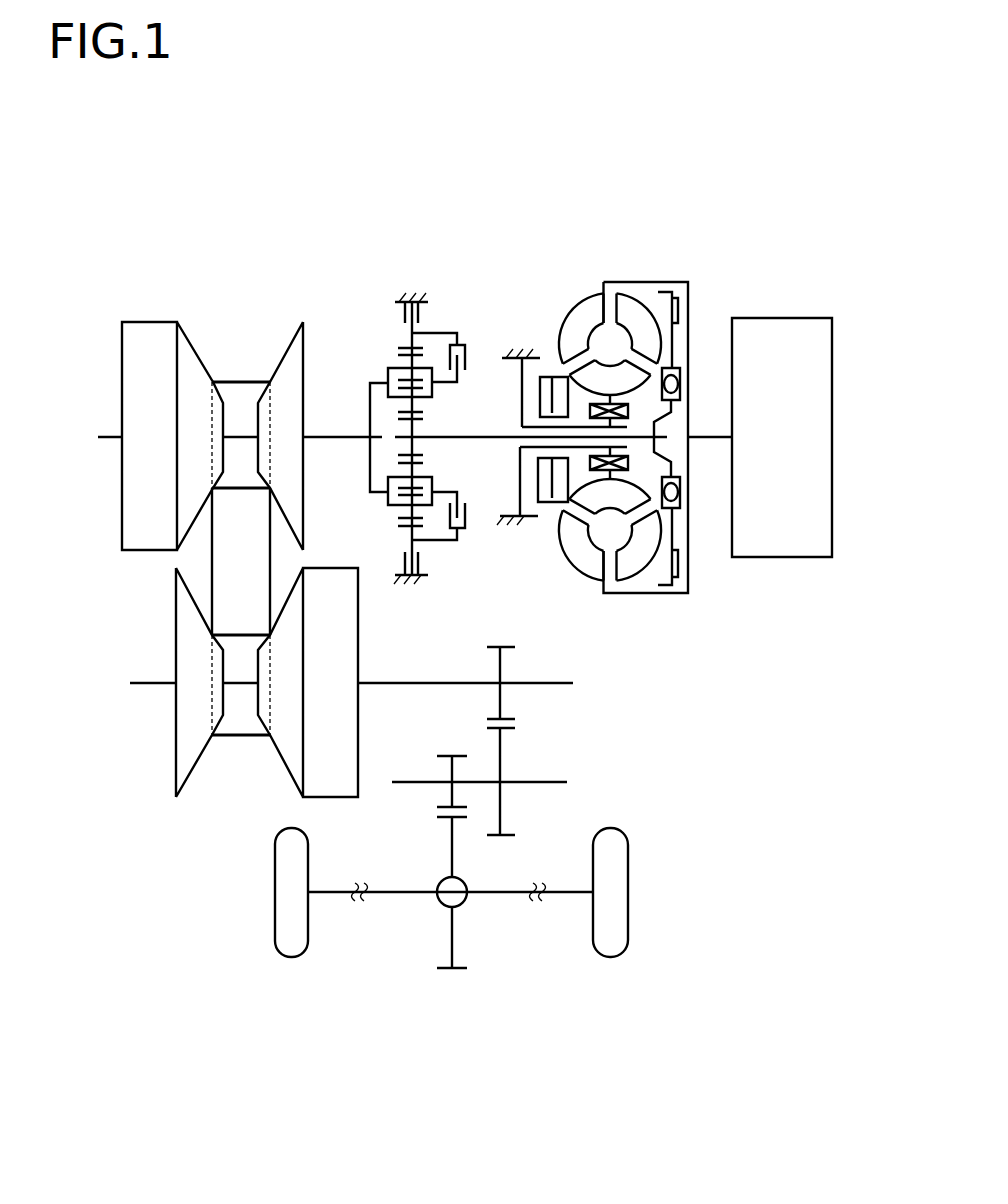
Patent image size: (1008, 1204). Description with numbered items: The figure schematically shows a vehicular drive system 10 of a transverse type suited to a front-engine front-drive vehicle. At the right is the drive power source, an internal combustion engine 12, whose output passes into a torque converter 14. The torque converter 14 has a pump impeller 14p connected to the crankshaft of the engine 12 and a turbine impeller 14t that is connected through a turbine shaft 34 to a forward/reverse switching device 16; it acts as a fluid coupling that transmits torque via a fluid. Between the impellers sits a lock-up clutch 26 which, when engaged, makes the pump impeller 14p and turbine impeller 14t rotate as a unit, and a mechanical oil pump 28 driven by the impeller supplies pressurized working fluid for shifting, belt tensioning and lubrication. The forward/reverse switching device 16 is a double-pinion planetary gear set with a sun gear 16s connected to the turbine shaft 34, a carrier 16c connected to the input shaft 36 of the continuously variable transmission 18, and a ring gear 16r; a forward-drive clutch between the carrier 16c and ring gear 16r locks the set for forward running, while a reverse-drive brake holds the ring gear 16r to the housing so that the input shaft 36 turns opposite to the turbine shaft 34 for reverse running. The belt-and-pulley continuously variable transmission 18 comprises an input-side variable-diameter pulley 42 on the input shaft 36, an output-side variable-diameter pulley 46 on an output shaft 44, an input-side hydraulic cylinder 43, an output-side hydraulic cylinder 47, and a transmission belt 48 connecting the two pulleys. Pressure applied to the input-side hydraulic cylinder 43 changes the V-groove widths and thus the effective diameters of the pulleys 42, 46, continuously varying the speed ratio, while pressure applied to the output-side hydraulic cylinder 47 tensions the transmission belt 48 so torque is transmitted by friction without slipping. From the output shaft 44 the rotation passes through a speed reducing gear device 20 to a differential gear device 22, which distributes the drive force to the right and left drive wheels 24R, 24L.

The vehicular drive system 10 is at (790, 252).
The internal combustion engine 12 is at (820, 390).
The torque converter 14 is at (628, 260).
The pump impeller 14p is at (580, 553).
The turbine impeller 14t is at (625, 562).
The forward/reverse switching device 16 is at (457, 296).
The carrier 16c is at (388, 373).
The sun gear 16s is at (403, 453).
The ring gear 16r is at (403, 527).
The continuously variable transmission 18 is at (225, 822).
The speed reducing gear device 20 is at (602, 738).
The differential gear device 22 is at (443, 897).
The left drive wheel 24L is at (285, 940).
The right drive wheel 24R is at (620, 910).
The lock-up clutch 26 is at (678, 310).
The oil pump 28 is at (552, 377).
The turbine shaft 34 is at (487, 440).
The input shaft 36 is at (330, 435).
The input-side variable-diameter pulley 42 is at (285, 333).
The input-side hydraulic cylinder 43 is at (133, 343).
The output shaft 44 is at (427, 687).
The output-side variable-diameter pulley 46 is at (195, 780).
The output-side hydraulic cylinder 47 is at (348, 662).
The transmission belt 48 is at (243, 380).